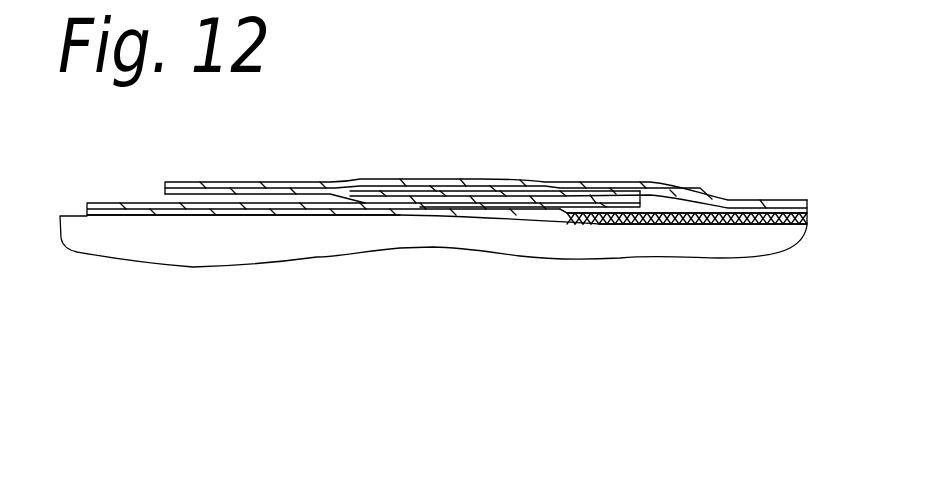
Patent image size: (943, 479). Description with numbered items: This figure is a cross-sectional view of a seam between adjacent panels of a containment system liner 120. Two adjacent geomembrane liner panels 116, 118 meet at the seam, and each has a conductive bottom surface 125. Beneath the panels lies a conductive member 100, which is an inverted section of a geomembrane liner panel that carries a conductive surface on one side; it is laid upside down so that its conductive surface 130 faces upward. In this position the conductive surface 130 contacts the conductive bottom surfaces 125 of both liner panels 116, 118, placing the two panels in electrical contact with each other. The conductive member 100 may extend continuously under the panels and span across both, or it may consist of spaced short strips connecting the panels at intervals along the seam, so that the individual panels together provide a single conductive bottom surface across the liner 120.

The conductive member 100 is at (672, 225).
The geomembrane liner panel 116 is at (200, 182).
The geomembrane liner panel 118 is at (218, 216).
The liner 120 is at (593, 135).
The conductive bottom surface 125 is at (133, 216).
The conductive surface 130 is at (658, 208).